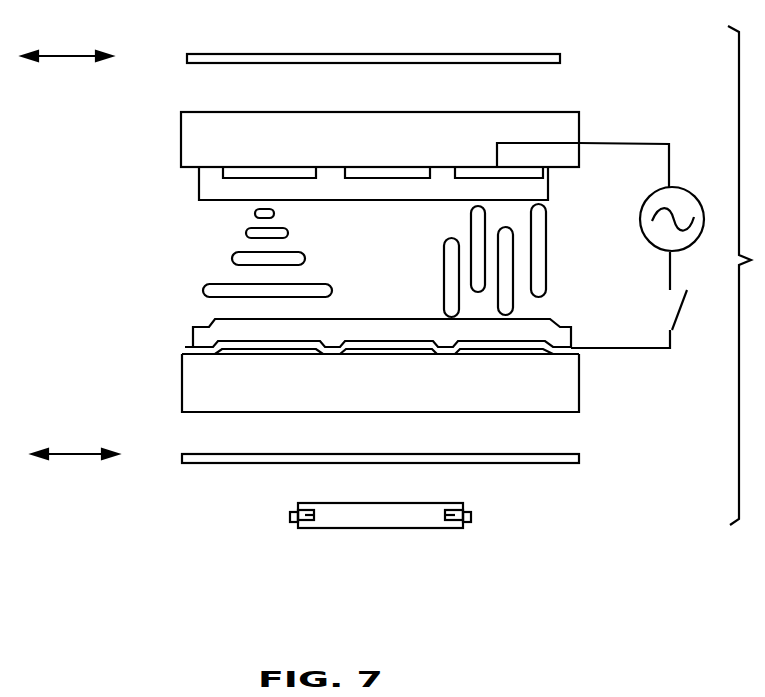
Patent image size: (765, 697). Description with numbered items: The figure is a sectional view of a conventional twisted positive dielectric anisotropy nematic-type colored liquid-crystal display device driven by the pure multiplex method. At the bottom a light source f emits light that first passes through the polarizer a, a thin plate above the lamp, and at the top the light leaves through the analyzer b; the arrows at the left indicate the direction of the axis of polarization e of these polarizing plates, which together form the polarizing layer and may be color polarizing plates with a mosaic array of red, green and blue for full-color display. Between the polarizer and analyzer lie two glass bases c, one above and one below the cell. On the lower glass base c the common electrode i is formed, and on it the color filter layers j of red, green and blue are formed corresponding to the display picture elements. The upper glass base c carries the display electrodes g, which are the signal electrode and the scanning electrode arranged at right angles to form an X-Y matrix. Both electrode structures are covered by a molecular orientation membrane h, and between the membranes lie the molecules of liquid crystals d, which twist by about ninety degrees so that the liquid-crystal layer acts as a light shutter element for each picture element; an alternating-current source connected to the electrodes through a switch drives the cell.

The polarizer a is at (555, 464).
The analyzer b is at (491, 53).
The glass base c is at (572, 112).
The molecules of liquid crystals d is at (232, 258).
The direction of the axis of polarization e is at (77, 53).
The light source f is at (400, 529).
The display electrodes g is at (230, 178).
The molecular orientation membrane h is at (548, 197).
The common electrode i is at (185, 352).
The color filter layer j is at (243, 357).